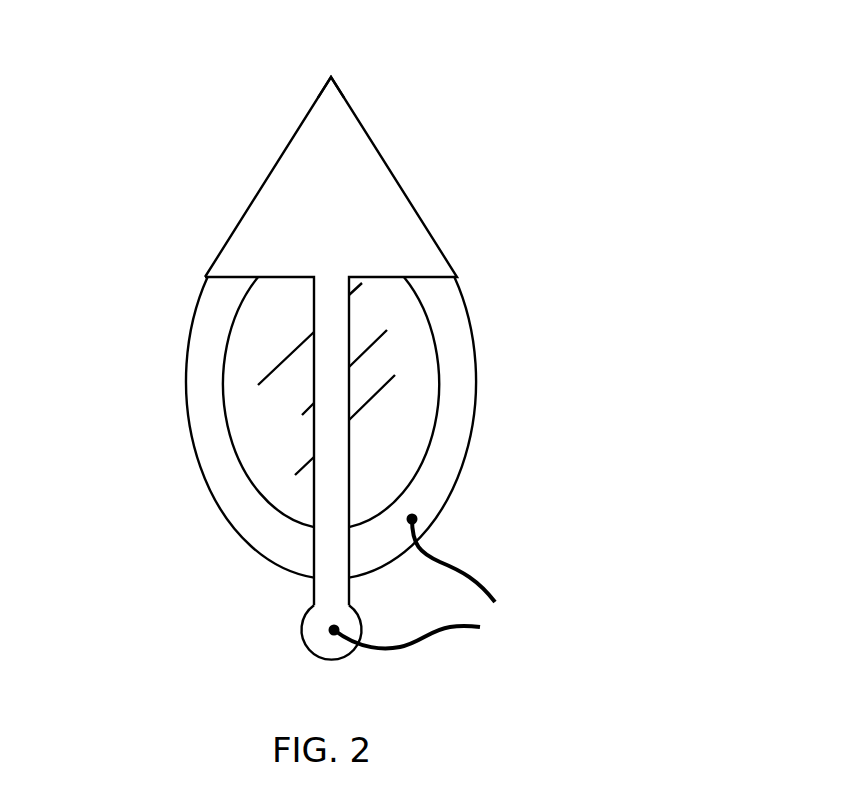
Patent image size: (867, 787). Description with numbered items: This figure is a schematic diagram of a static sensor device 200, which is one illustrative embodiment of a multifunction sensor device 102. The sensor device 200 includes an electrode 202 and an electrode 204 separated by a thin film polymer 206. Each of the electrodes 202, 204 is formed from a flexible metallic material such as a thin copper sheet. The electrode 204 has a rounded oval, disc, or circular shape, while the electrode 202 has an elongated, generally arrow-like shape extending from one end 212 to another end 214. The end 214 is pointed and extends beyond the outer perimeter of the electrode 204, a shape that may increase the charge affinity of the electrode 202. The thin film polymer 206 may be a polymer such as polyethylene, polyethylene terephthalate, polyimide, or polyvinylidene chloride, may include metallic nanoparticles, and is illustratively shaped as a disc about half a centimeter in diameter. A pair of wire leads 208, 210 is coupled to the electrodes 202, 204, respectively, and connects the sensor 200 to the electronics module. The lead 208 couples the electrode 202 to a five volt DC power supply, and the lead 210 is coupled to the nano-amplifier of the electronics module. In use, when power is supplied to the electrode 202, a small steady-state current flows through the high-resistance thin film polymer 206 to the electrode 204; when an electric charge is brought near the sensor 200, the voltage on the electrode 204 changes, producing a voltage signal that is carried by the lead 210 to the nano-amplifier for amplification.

The multifunction sensor device 102 is at (88, 98).
The static sensor device 200 is at (747, 90).
The electrode 202 is at (410, 228).
The electrode 204 is at (447, 327).
The thin film polymer 206 is at (395, 413).
The wire lead 208 is at (400, 657).
The wire lead 210 is at (460, 562).
The end 212 is at (297, 675).
The end 214 is at (313, 65).